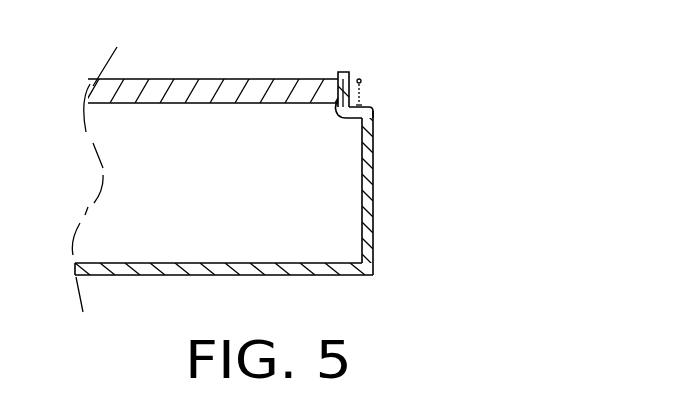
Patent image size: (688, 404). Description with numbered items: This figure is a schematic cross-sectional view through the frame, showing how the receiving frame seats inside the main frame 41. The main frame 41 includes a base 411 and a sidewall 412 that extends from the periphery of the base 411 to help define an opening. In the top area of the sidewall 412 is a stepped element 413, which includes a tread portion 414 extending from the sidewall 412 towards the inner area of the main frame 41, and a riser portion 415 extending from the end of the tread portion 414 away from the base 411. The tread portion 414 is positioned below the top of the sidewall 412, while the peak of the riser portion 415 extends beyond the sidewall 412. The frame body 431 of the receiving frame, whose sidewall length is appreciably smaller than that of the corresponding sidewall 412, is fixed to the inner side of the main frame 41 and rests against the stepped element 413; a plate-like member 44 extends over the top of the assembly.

The cover plate 44 is at (191, 88).
The frame body 431 is at (340, 83).
The stepped element 413 is at (465, 50).
The riser portion 415 is at (351, 73).
The tread portion 414 is at (371, 109).
The main frame 41 is at (480, 212).
The sidewall 412 is at (373, 223).
The base 411 is at (340, 276).